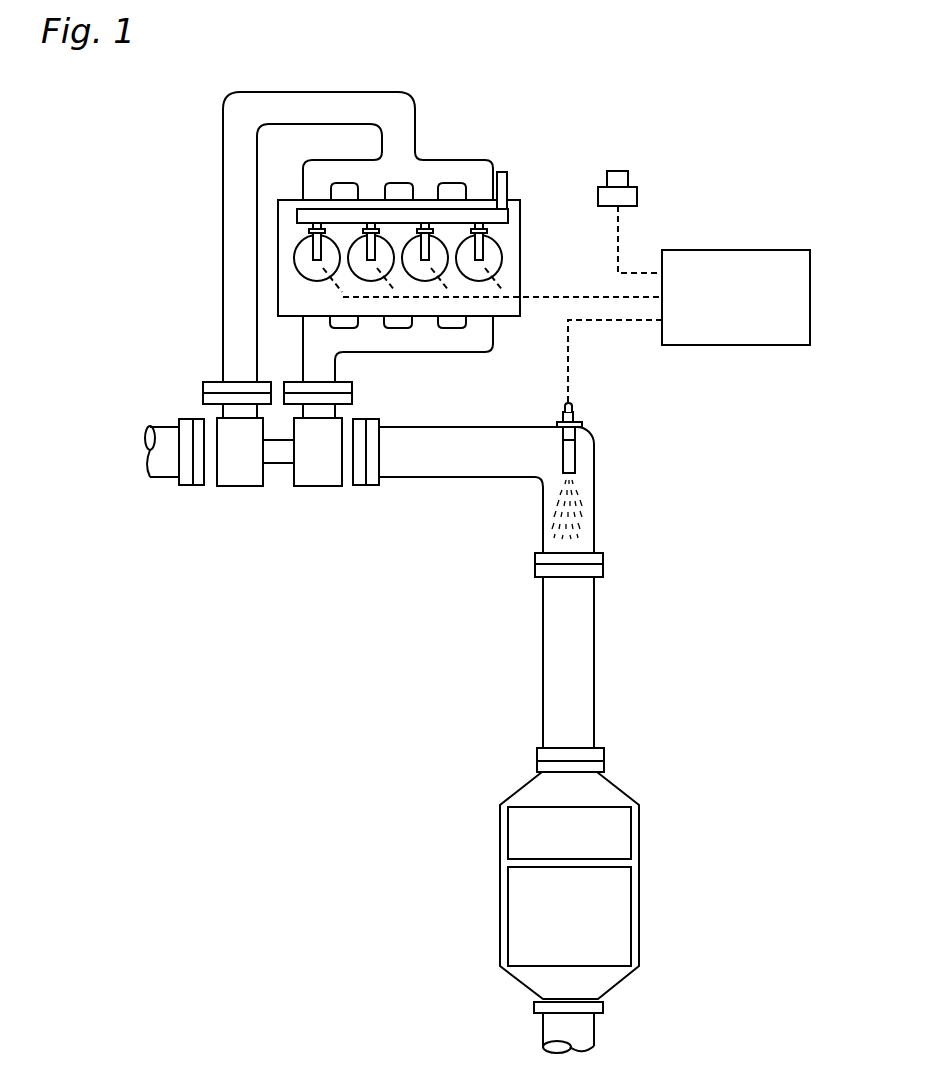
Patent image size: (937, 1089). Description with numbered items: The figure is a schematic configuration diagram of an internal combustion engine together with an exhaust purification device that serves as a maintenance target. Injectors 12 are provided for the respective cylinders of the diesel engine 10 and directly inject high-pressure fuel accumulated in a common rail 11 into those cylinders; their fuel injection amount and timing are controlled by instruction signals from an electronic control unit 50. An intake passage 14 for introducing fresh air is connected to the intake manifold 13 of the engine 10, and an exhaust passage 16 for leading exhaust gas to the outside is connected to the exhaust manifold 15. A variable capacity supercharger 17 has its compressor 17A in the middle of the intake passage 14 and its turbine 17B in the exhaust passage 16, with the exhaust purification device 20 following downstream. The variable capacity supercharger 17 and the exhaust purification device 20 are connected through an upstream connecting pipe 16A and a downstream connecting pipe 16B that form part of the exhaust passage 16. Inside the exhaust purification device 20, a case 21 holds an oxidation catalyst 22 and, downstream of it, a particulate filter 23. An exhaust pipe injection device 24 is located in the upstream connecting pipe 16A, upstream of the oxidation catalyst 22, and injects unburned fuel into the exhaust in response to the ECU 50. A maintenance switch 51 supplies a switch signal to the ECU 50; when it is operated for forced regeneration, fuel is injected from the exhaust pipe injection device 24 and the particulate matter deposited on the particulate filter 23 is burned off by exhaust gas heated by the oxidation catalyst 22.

The diesel engine 10 is at (522, 250).
The common rail 11 is at (477, 209).
The injectors 12 is at (318, 250).
The intake manifold 13 is at (427, 167).
The intake passage 14 is at (223, 212).
The exhaust manifold 15 is at (478, 336).
The exhaust passage 16 is at (547, 587).
The upstream connecting pipe 16A is at (465, 477).
The downstream connecting pipe 16B is at (544, 647).
The variable capacity supercharger 17 is at (262, 496).
The compressor 17A is at (247, 486).
The turbine 17B is at (316, 486).
The exhaust purification device 20 is at (618, 879).
The case 21 is at (623, 792).
The oxidation catalyst 22 is at (556, 845).
The particulate filter 23 is at (556, 929).
The exhaust pipe injection device 24 is at (576, 458).
The electronic control unit 50 is at (740, 250).
The maintenance switch 51 is at (620, 171).